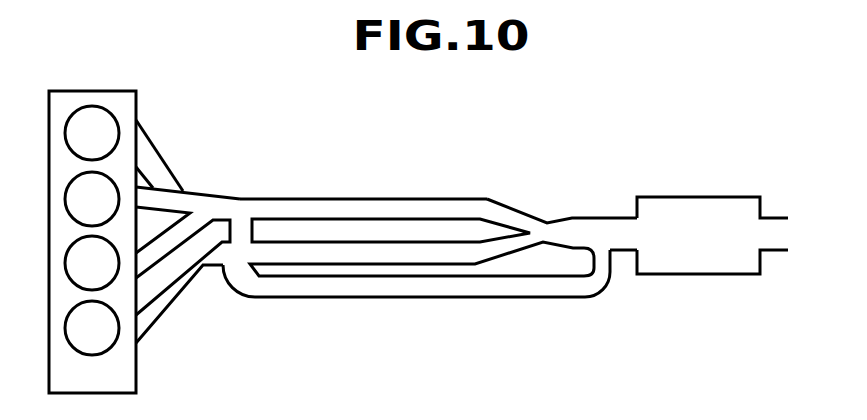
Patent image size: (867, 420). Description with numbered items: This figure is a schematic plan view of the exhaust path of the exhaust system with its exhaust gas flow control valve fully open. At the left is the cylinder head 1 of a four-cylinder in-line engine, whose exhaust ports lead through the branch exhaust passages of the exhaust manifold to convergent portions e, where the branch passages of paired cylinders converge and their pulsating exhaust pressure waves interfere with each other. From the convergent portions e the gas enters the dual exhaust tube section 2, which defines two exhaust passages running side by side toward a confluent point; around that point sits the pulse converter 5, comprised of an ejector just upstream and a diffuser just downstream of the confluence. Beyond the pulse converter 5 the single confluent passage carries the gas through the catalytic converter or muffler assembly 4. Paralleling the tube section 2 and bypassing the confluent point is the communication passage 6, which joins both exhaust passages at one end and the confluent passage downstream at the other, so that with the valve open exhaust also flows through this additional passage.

The cylinder head 1 is at (115, 97).
The dual exhaust tube section 2 is at (478, 190).
The catalytic converter or muffler assembly 4 is at (692, 197).
The pulse converter 5 is at (570, 190).
The communication passage 6 is at (453, 300).
The convergent portions e is at (197, 200).